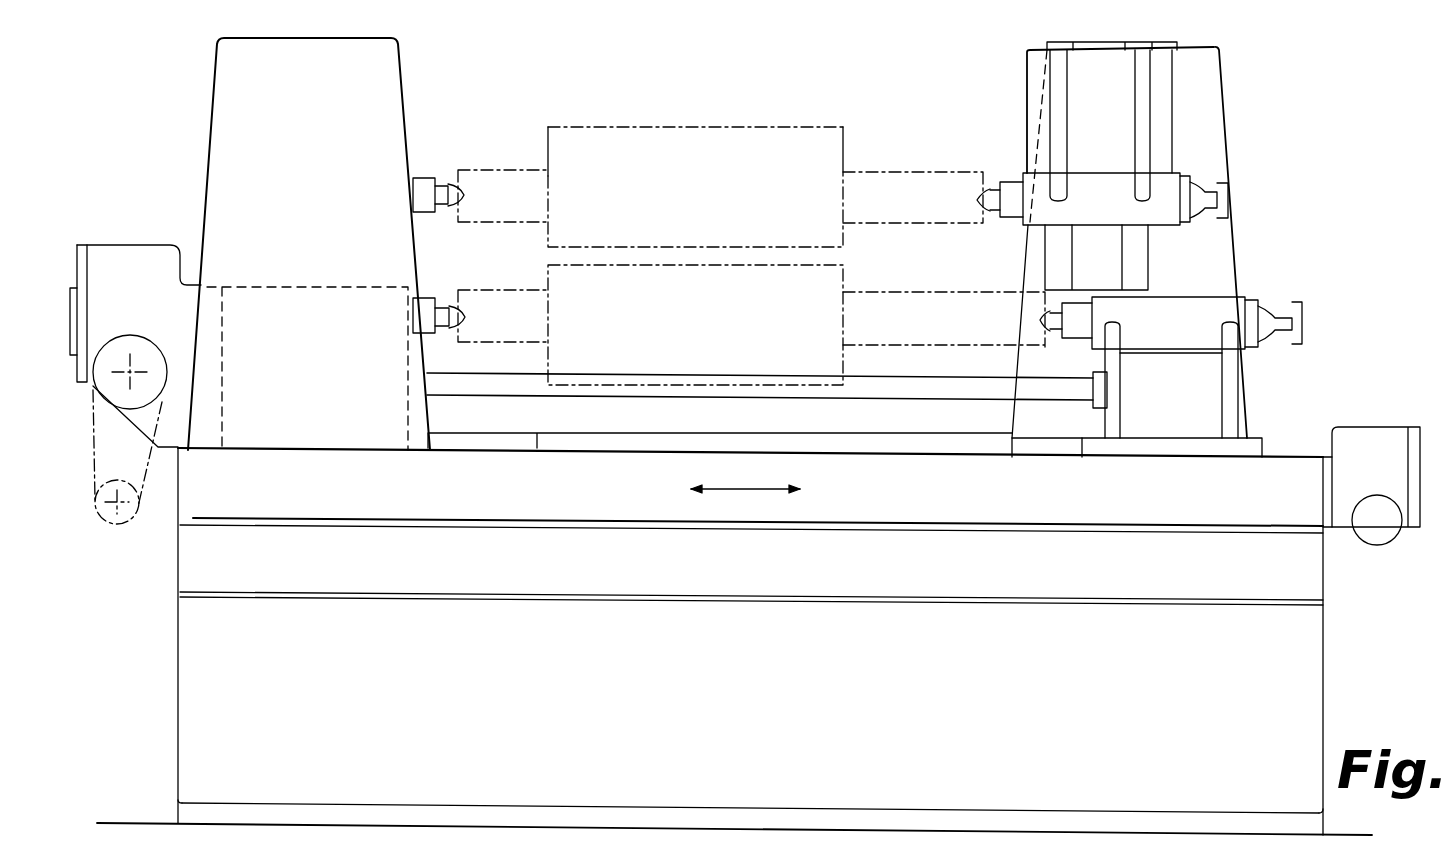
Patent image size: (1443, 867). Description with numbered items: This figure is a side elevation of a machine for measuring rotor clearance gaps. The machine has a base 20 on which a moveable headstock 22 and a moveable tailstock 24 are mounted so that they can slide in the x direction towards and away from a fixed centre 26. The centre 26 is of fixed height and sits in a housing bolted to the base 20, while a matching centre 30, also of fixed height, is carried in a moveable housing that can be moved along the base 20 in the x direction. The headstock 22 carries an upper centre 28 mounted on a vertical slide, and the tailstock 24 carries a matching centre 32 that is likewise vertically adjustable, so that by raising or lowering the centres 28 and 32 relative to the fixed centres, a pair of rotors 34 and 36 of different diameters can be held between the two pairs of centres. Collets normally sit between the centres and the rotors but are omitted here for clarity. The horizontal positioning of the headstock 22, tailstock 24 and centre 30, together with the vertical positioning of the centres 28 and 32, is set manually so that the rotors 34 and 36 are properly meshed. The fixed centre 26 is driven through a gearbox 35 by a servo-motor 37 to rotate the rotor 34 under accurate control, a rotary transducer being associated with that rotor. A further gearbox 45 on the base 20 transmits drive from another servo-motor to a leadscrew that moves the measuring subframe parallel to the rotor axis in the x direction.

The base 20 is at (735, 688).
The headstock 22 is at (222, 147).
The tailstock 24 is at (1228, 128).
The centre 26 is at (449, 313).
The upper centre 28 is at (453, 178).
The centre 30 is at (1043, 315).
The centre 32 is at (992, 184).
The rotor 34 is at (703, 327).
The rotor 36 is at (704, 201).
The gearbox 35 is at (75, 245).
The servo-motor 37 is at (99, 520).
The gearbox 45 is at (1358, 432).